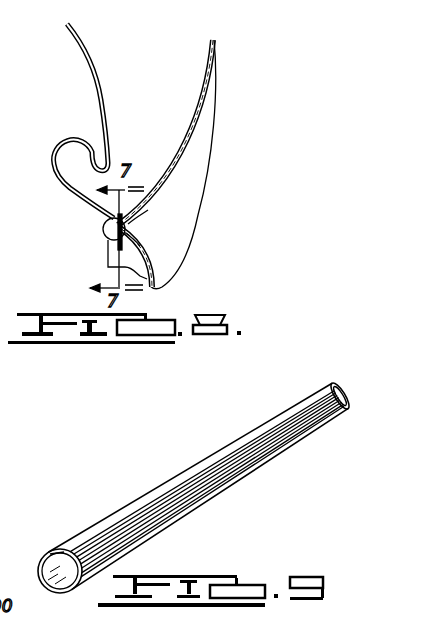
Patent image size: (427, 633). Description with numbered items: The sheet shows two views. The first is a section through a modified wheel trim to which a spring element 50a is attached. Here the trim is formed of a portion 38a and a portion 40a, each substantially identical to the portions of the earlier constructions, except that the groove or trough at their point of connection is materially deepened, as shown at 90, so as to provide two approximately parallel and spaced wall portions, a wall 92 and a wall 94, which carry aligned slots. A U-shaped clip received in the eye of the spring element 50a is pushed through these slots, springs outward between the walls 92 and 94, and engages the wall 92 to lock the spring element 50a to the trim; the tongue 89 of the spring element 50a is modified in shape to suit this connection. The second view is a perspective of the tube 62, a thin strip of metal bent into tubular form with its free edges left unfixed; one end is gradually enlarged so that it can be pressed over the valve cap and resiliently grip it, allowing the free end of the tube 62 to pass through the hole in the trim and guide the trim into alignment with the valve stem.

In FIG. 8, the spring element 50a is at (97, 72).
In FIG. 8, the portion 38a is at (196, 130).
In FIG. 8, the portion 40a is at (178, 277).
In FIG. 8, the tongue 89 is at (105, 222).
In FIG. 8, the groove 90 is at (109, 232).
In FIG. 8, the wall 92 is at (146, 214).
In FIG. 8, the wall 94 is at (134, 237).
In FIG. 9, the tube 62 is at (228, 476).